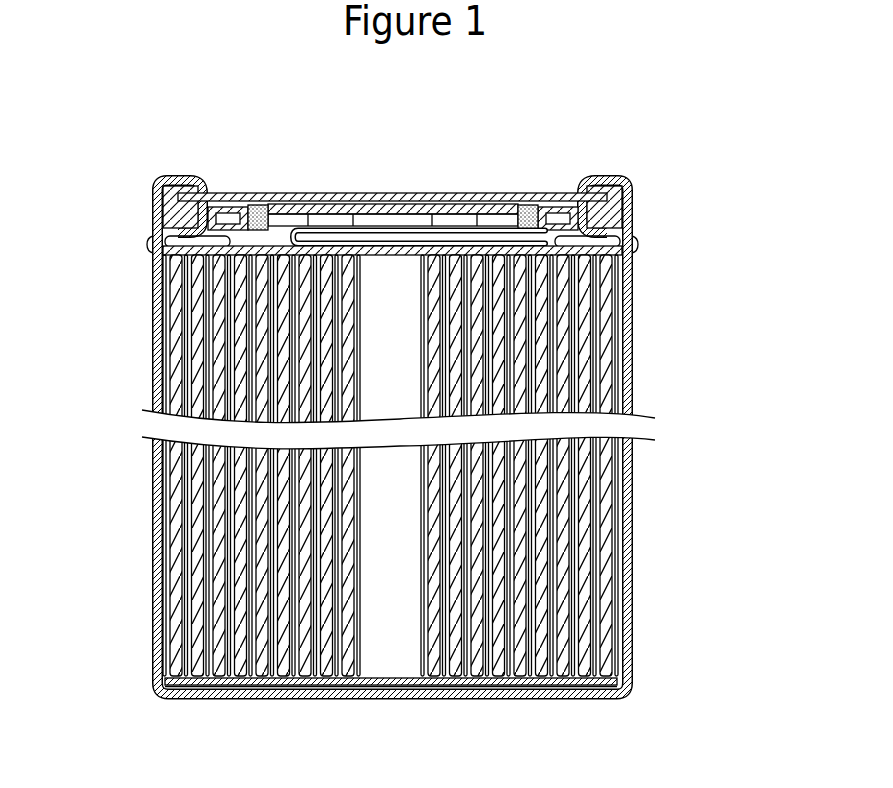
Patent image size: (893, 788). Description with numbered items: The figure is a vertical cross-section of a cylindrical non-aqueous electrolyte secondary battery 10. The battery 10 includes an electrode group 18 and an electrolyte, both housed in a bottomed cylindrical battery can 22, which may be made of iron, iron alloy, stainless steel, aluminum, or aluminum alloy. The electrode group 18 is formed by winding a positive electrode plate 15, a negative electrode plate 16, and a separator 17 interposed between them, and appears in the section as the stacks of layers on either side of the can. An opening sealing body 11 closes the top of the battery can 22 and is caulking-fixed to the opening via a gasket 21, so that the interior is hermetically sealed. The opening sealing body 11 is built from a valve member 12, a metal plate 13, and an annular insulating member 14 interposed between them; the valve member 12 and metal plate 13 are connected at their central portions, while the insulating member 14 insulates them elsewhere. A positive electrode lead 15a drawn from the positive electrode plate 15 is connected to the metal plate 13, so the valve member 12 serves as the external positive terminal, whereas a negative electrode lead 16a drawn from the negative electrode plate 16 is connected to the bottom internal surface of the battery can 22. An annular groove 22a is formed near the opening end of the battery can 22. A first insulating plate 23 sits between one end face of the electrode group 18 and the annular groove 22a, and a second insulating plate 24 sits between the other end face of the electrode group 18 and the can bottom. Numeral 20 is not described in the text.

The non-aqueous electrolyte secondary battery 10 is at (98, 76).
The opening sealing body 11 is at (480, 166).
The valve member 12 is at (407, 200).
The metal plate 13 is at (562, 224).
The annular insulating member 14 is at (460, 204).
The positive electrode plate 15 is at (632, 478).
The positive electrode lead 15a is at (398, 252).
The negative electrode plate 16 is at (634, 530).
The negative electrode lead 16a is at (376, 688).
The separator 17 is at (636, 574).
The electrode group 18 is at (473, 465).
The upper insulating plate 20 is at (157, 252).
The gasket 21 is at (165, 200).
The battery can 22 is at (152, 383).
The annular groove 22a is at (612, 236).
The first insulating plate 23 is at (163, 238).
The second insulating plate 24 is at (540, 688).